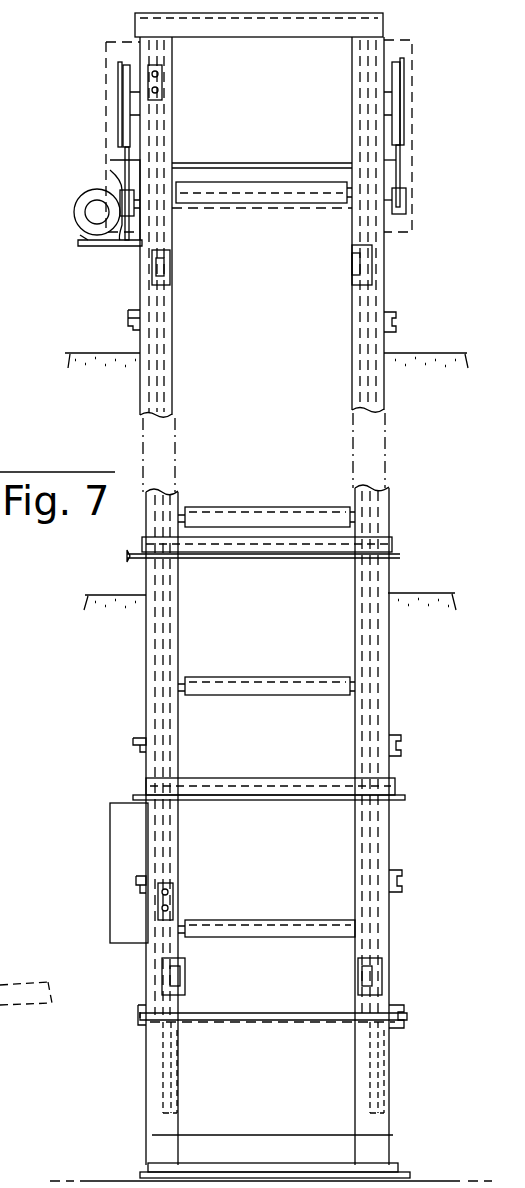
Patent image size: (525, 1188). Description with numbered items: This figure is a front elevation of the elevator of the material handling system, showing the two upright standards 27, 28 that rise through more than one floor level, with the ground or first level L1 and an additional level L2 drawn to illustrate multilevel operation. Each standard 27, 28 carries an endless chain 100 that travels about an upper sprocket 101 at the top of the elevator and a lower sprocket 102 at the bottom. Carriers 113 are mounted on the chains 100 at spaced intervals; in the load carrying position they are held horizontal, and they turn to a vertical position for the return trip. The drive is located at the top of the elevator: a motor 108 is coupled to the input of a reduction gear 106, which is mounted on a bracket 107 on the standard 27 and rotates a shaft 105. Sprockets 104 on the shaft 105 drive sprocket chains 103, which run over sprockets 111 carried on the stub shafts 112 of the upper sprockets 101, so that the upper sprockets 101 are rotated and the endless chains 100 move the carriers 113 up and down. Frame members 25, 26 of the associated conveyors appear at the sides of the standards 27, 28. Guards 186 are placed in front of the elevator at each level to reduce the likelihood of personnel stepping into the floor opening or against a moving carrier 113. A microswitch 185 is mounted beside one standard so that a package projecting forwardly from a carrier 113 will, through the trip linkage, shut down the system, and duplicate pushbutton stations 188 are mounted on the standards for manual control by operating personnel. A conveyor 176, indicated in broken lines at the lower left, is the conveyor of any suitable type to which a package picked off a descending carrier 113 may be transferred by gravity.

The frame member 25 is at (362, 265).
The frame member 26 is at (156, 265).
The standard 27 is at (140, 407).
The standard 28 is at (384, 408).
The endless chain 100 is at (163, 322).
The upper sprocket 101 is at (160, 130).
The lower sprocket 102 is at (172, 1068).
The sprocket chain 103 is at (125, 170).
The sprocket 104 is at (120, 245).
The shaft 105 is at (258, 208).
The reduction gear 106 is at (82, 192).
The bracket 107 is at (80, 242).
The motor 108 is at (74, 210).
The sprocket 111 is at (118, 68).
The stub shaft 112 is at (124, 104).
The carrier 113 is at (265, 188).
The conveyor 176 is at (6, 956).
The microswitch 185 is at (126, 850).
The guard 186 is at (243, 30).
The pushbutton station 188 is at (160, 78).
The ground level 1 L1 is at (98, 352).
The additional level L2 is at (110, 592).